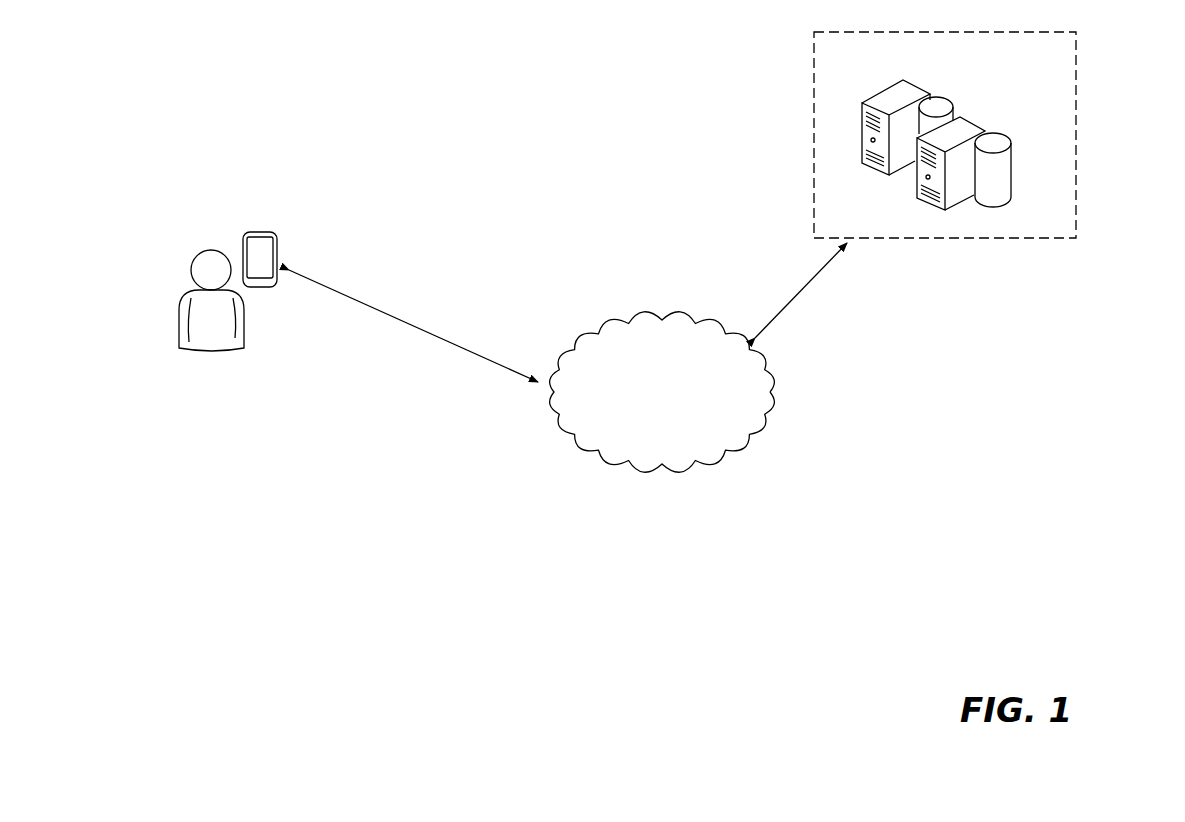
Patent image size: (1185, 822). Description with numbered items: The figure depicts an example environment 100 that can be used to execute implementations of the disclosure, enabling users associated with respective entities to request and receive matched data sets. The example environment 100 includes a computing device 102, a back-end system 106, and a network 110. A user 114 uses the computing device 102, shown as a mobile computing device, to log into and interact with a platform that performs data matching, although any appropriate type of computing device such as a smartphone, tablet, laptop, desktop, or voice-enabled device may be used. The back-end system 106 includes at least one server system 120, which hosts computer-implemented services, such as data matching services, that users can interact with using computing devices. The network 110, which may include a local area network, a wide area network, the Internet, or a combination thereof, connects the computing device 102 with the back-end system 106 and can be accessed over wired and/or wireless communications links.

The example environment 100 is at (512, 78).
The computing device 102 is at (252, 233).
The back-end system 106 is at (1077, 133).
The network 110 is at (662, 318).
The user 114 is at (211, 350).
The server system 120 is at (957, 108).